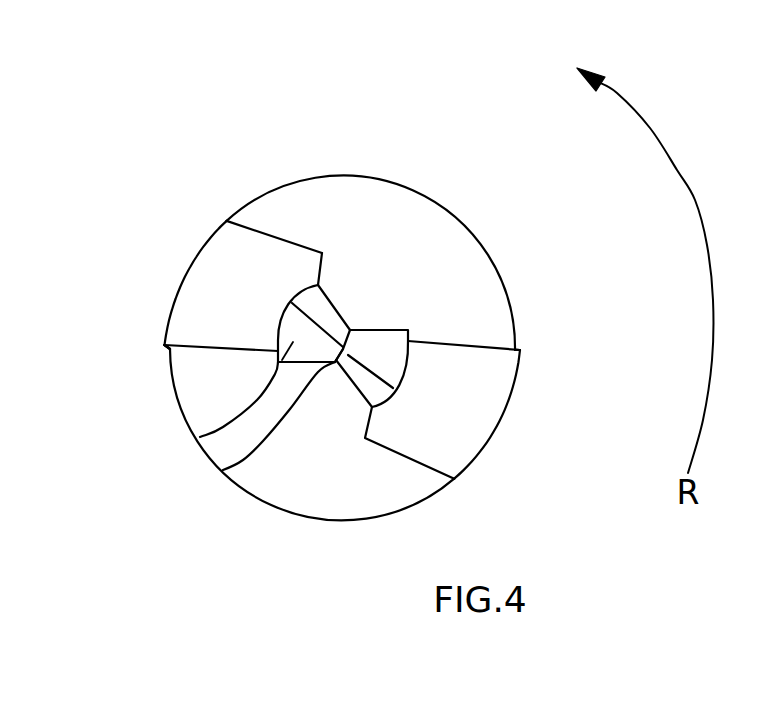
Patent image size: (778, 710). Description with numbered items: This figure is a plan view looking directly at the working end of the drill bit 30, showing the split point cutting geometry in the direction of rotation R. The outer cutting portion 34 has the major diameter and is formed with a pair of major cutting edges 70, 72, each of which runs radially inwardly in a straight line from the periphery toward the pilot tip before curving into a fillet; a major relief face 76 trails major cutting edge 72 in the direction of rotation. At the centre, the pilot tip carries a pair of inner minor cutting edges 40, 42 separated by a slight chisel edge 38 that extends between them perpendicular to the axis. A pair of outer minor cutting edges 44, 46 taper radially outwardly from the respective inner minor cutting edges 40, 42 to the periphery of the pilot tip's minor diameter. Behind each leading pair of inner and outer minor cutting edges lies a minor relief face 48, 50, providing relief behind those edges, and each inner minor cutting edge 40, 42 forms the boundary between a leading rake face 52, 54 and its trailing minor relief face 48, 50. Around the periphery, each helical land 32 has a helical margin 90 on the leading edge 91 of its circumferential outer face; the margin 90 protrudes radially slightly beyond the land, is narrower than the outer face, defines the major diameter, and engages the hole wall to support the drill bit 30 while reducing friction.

The drill body 30 is at (412, 232).
The helical land 32 is at (223, 225).
The outer cutting portion 34 is at (392, 350).
The chisel edge 38 is at (311, 363).
The inner minor cutting edge 40 is at (348, 330).
The inner minor cutting edge 42 is at (343, 352).
The outer minor cutting edge 44 is at (385, 322).
The outer minor cutting edge 46 is at (223, 470).
The minor relief face 48 is at (481, 304).
The minor relief face 50 is at (200, 437).
The rake face 52 is at (318, 285).
The rake face 54 is at (350, 367).
The major cutting edge 70 is at (488, 348).
The major cutting edge 72 is at (220, 350).
The major relief face 76 is at (240, 290).
The helical margin 90 is at (163, 341).
The leading edge 91 is at (160, 342).